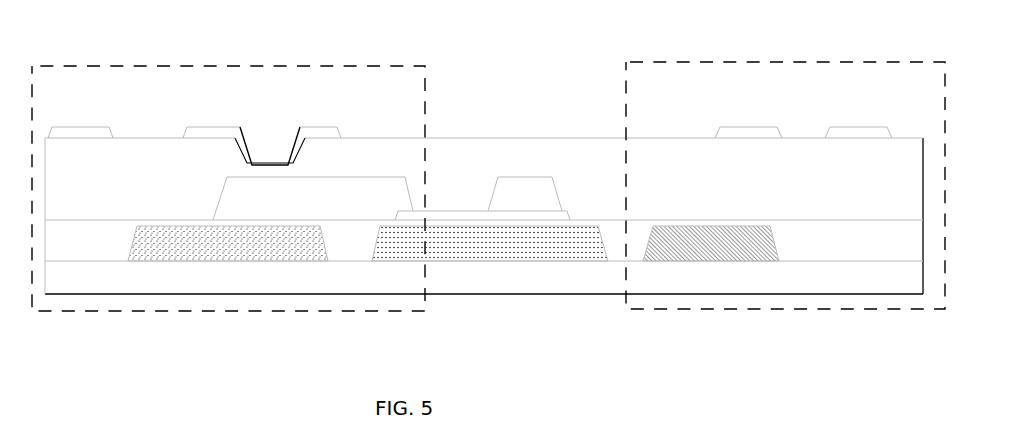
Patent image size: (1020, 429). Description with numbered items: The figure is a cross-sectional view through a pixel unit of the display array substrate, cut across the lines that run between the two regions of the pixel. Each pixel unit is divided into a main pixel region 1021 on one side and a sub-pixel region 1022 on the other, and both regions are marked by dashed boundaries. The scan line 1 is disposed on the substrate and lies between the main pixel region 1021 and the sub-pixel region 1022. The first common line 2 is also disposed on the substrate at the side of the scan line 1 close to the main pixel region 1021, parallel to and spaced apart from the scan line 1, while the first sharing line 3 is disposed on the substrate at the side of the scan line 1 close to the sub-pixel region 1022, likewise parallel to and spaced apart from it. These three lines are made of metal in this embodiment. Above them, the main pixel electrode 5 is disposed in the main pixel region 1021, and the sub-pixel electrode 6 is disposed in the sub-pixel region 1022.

The scan line 1 is at (518, 248).
The first common line 2 is at (250, 242).
The first sharing line 3 is at (725, 242).
The main pixel electrode 5 is at (229, 135).
The sub-pixel electrode 6 is at (855, 135).
The main pixel region 1021 is at (363, 66).
The sub-pixel region 1022 is at (792, 62).